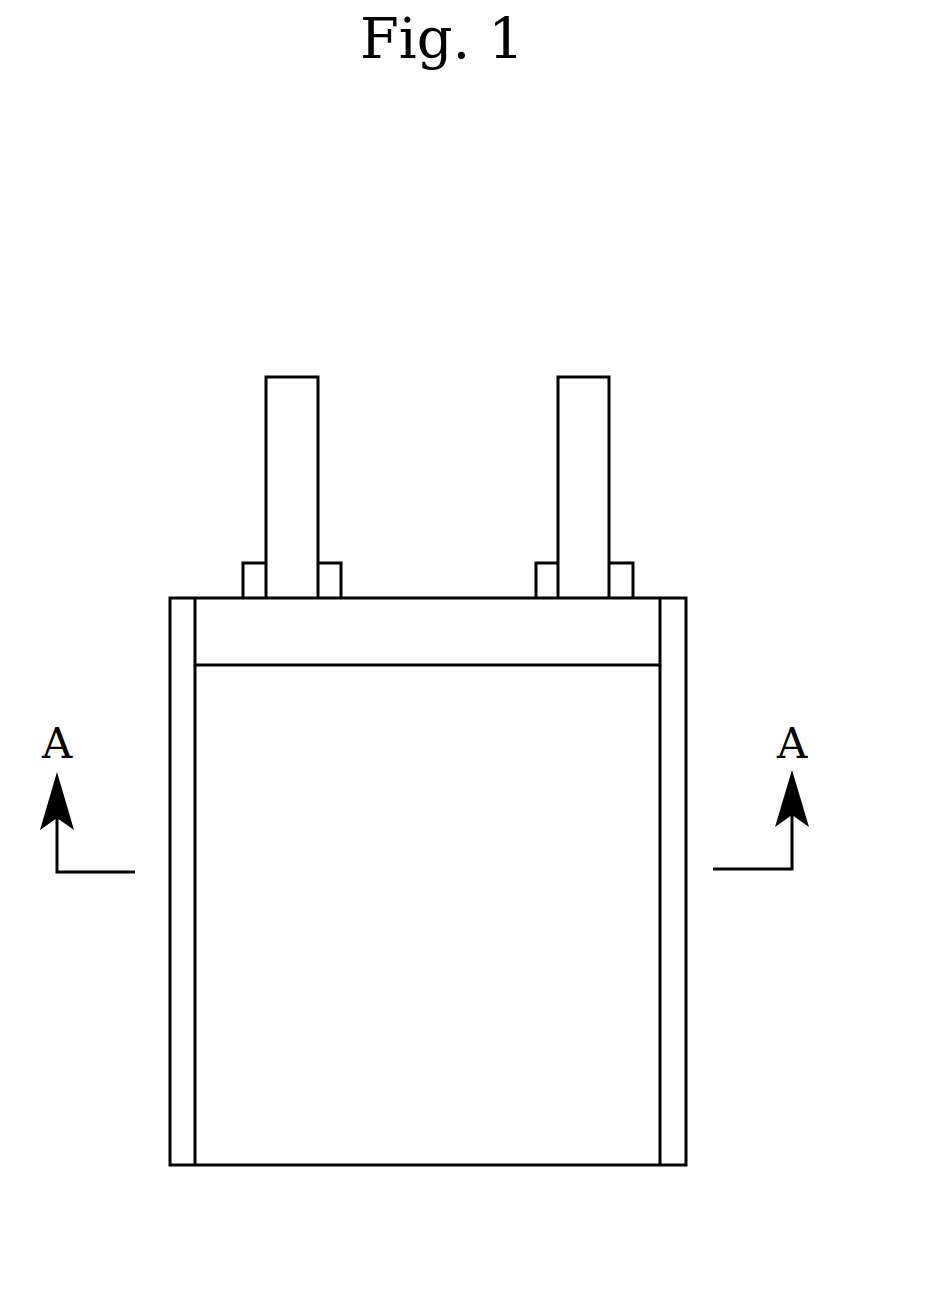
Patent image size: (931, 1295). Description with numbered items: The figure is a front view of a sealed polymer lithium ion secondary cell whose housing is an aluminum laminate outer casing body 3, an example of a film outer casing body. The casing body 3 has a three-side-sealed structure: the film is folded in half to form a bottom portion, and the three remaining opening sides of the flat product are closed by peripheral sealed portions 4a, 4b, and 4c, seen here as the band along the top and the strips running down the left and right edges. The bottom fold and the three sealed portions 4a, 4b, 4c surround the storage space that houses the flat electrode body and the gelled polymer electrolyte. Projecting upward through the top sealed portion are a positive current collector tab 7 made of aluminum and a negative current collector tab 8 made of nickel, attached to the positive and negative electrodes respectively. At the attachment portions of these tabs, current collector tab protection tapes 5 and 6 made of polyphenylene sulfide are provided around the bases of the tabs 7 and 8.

The aluminum laminate outer casing body 3 is at (554, 1113).
The peripheral sealed portion 4a is at (365, 633).
The peripheral sealed portion 4b is at (675, 692).
The peripheral sealed portion 4c is at (187, 770).
The current collector tab protection tape 5 is at (253, 570).
The current collector tab protection tape 6 is at (623, 578).
The positive current collector tab 7 is at (298, 448).
The negative current collector tab 8 is at (583, 455).